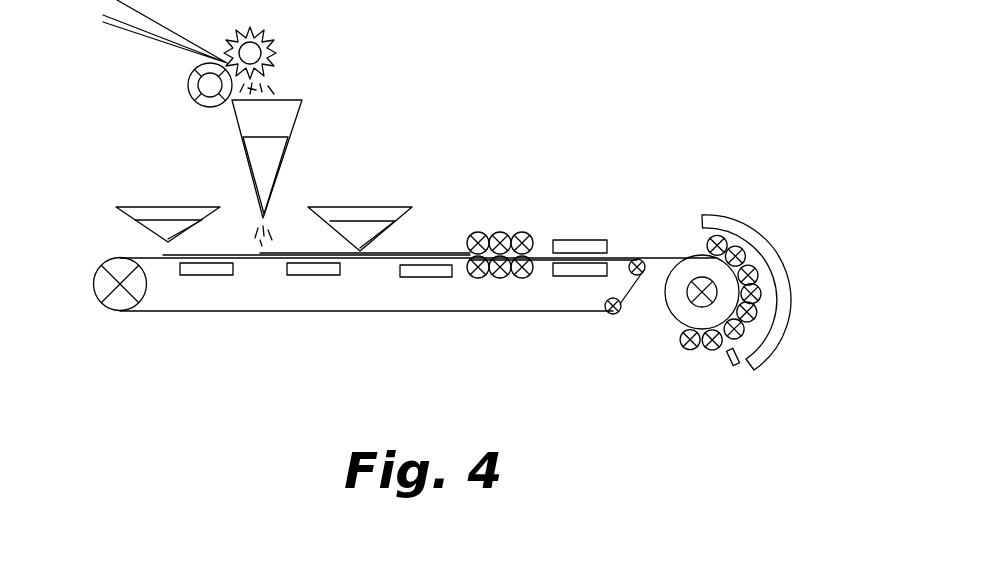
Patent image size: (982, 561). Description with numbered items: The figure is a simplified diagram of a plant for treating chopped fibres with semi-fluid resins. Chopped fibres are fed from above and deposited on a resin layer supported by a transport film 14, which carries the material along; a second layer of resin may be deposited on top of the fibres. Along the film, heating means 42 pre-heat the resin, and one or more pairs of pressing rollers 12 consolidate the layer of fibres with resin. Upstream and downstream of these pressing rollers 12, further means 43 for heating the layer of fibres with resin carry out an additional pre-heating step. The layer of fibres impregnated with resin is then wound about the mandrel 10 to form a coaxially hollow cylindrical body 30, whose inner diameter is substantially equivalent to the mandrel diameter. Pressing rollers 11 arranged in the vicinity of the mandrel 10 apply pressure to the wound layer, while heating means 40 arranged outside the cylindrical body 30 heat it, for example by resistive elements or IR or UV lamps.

The mandrel 10 is at (702, 292).
The pressing rollers 11 is at (735, 366).
The pressing rollers 12 is at (490, 228).
The transport film 14 is at (155, 312).
The coaxially hollow cylindrical body 30 is at (677, 302).
The heating means 40 is at (758, 245).
The heating means 42 is at (208, 276).
The means for heating the layer of fibres with resin 43 is at (423, 277).